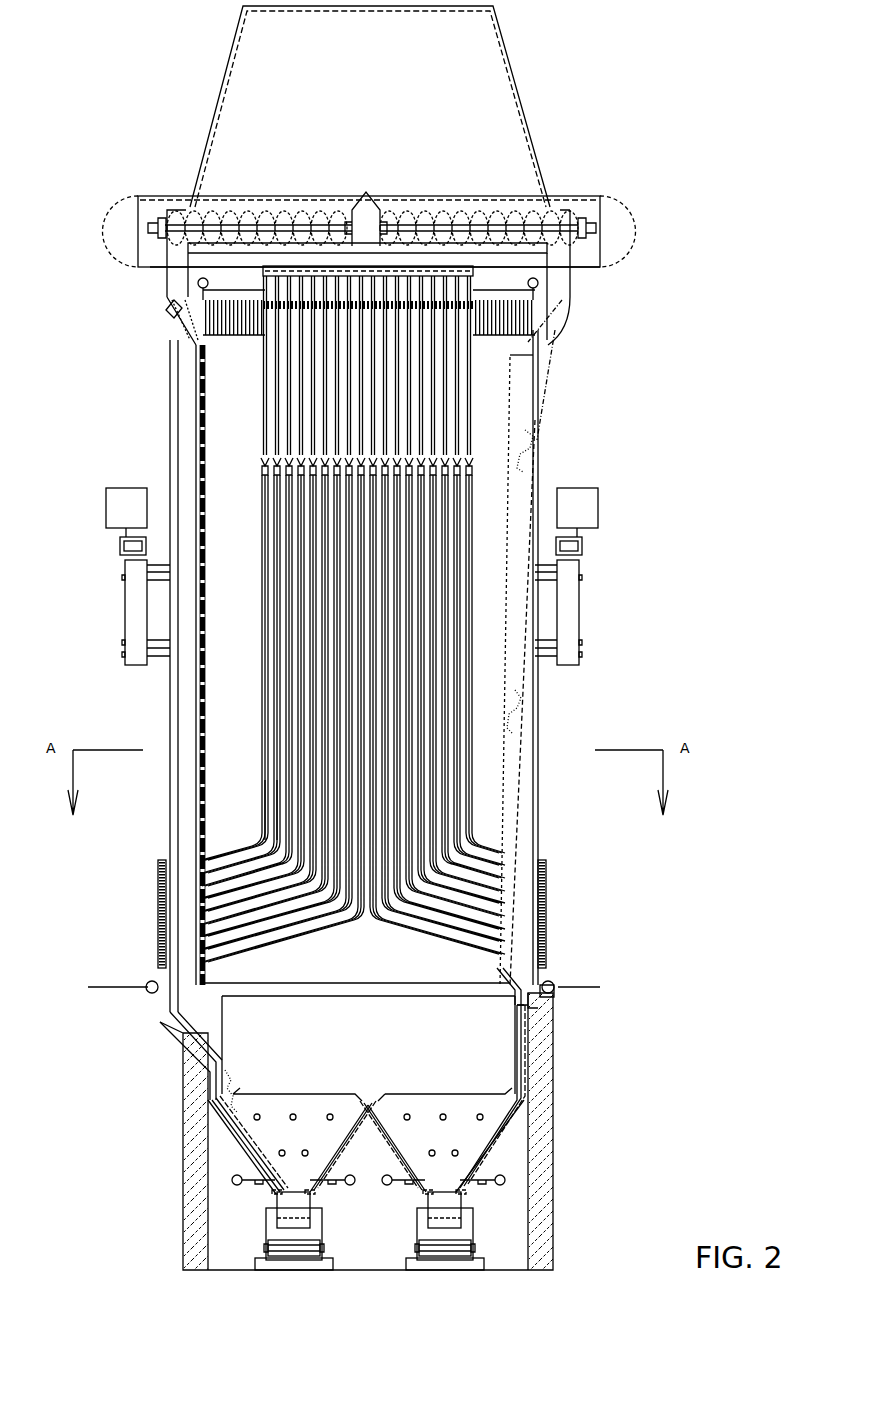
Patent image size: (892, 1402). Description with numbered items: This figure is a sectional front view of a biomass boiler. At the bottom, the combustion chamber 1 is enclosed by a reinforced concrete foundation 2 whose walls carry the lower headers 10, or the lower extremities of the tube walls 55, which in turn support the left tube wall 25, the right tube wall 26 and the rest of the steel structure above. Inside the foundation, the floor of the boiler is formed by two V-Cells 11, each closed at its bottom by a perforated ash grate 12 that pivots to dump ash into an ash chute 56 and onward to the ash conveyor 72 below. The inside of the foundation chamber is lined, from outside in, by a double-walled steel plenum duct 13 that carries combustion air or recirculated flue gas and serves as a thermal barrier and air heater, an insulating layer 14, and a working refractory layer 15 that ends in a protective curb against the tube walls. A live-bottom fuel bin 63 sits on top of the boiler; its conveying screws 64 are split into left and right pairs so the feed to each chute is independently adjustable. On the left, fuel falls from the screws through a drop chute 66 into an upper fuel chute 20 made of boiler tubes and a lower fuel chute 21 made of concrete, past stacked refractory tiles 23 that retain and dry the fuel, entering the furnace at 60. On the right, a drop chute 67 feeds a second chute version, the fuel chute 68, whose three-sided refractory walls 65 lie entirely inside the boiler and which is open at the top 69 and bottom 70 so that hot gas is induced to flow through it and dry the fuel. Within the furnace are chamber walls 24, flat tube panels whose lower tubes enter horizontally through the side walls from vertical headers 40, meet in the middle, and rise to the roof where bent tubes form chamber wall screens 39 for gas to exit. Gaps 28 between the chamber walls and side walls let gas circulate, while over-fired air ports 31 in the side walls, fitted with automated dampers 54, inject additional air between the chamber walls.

The combustion chamber 1 is at (160, 984).
The reinforced concrete foundation 2 is at (198, 1190).
The lower headers 10 is at (345, 987).
The V-Cell 11 is at (290, 1094).
The ash grate 12 is at (282, 1206).
The plenum duct 13 is at (212, 1082).
The insulating layer 14 is at (220, 1118).
The working refractory layer 15 is at (240, 1140).
The upper fuel chute 20 is at (170, 433).
The lower fuel chute 21 is at (176, 1027).
The refractory tiles 23 is at (200, 470).
The chamber walls 24 is at (265, 787).
The left tube wall 25 is at (205, 302).
The right tube wall 26 is at (538, 777).
The gaps 28 is at (240, 703).
The over-fired air ports 31 is at (160, 652).
The chamber wall screens 39 is at (265, 378).
The vertical headers 40 is at (158, 884).
The automated dampers 54 is at (122, 544).
The lower extremities of the tube walls 55 is at (150, 992).
The ash chute 56 is at (283, 1236).
The fuel drop point 60 is at (216, 1102).
The fuel bin 63 is at (525, 82).
The conveying screws 64 is at (242, 212).
The refractory walls 65 is at (510, 660).
The drop chute 66 is at (168, 291).
The drop chute 67 is at (574, 293).
The fuel chute 68 is at (520, 805).
The top opening 69 is at (530, 357).
The bottom opening 70 is at (500, 978).
The ash conveyor 72 is at (288, 1244).